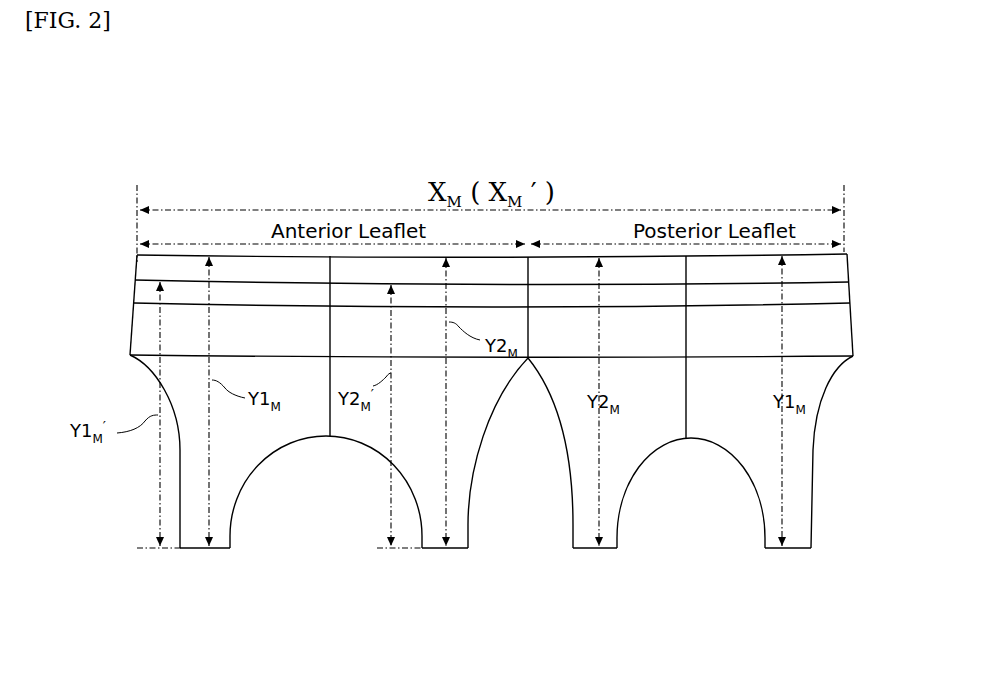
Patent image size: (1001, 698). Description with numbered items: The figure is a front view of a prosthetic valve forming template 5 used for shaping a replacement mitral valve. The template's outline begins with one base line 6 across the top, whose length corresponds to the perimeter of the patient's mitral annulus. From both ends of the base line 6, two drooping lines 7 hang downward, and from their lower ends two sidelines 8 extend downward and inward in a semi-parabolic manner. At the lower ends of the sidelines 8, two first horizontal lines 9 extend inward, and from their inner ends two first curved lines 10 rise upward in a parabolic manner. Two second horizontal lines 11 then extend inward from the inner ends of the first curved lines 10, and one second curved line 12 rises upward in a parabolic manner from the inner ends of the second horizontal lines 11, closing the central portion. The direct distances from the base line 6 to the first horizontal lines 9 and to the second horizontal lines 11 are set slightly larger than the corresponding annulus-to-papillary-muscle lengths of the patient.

The prosthetic valve forming template 5 is at (713, 157).
The base line 6 is at (560, 256).
The drooping lines 7 is at (130, 331).
The sidelines 8 is at (180, 476).
The first horizontal lines 9 is at (190, 550).
The first curved lines 10 is at (353, 443).
The second horizontal lines 11 is at (435, 550).
The second curved line 12 is at (535, 368).